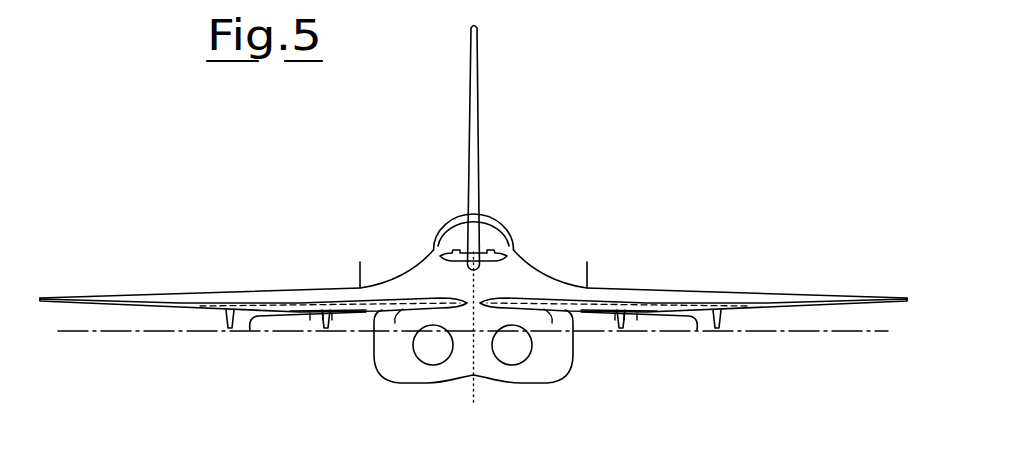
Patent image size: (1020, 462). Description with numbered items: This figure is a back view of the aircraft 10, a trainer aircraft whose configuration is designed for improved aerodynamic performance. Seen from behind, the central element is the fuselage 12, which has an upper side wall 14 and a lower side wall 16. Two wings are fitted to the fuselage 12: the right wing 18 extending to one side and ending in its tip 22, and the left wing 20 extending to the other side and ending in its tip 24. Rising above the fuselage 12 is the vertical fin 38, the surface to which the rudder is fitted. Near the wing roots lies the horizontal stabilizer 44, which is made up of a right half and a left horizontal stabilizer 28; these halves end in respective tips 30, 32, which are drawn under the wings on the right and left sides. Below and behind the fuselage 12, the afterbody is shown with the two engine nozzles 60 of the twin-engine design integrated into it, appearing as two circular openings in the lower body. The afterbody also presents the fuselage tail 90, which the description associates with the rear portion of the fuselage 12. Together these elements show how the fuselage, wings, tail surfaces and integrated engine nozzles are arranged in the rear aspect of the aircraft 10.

The aircraft 10 is at (589, 166).
The fuselage 12 is at (430, 246).
The upper side wall 14 is at (495, 240).
The lower side wall 16 is at (550, 367).
The right wing 18 is at (699, 297).
The left wing 20 is at (208, 297).
The tip of the right wing 22 is at (905, 297).
The tip of the left wing 24 is at (42, 297).
The left horizontal stabilizer 28 is at (308, 321).
The tip of the right horizontal stabilizer 30 is at (690, 330).
The tip of the left horizontal stabilizer 32 is at (250, 330).
The vertical fin 38 is at (478, 42).
The horizontal stabilizer 44 is at (535, 295).
The engine nozzles 60 is at (440, 350).
The fuselage tail 90 is at (471, 299).